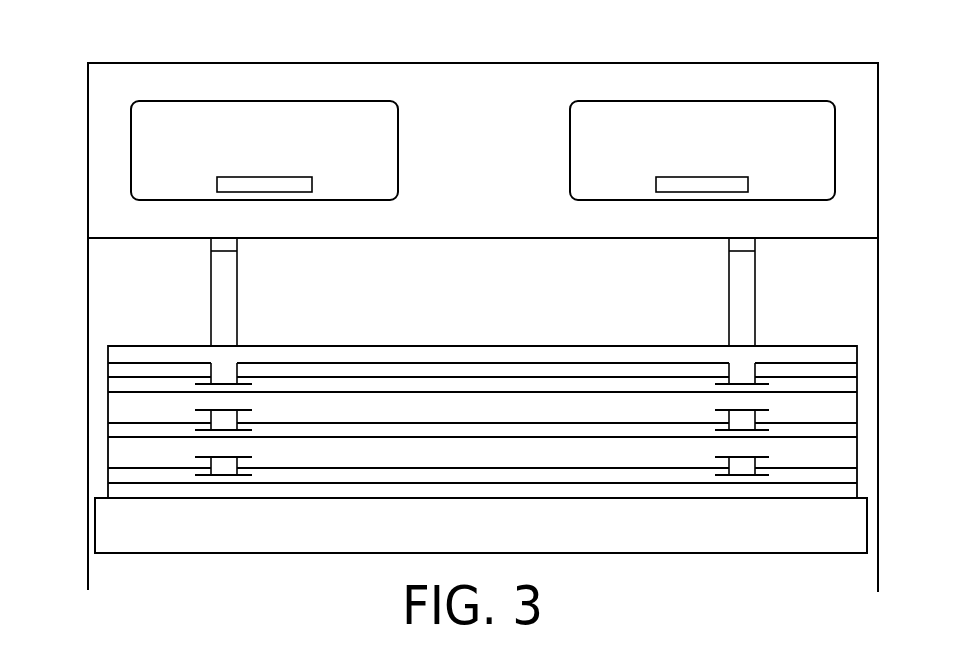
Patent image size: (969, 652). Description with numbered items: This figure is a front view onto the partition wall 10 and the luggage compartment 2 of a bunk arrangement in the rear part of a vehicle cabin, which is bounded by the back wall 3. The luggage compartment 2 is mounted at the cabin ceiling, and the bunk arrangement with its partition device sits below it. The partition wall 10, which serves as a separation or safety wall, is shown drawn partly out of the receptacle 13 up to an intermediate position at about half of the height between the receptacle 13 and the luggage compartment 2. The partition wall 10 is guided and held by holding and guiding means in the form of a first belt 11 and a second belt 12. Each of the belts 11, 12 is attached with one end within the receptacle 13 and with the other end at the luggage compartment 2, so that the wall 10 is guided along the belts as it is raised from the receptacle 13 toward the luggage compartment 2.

The luggage compartment 2 is at (460, 78).
The back wall 3 is at (120, 299).
The partition wall 10 is at (590, 468).
The first belt 11 is at (238, 277).
The second belt 12 is at (729, 277).
The receptacle 13 is at (302, 537).